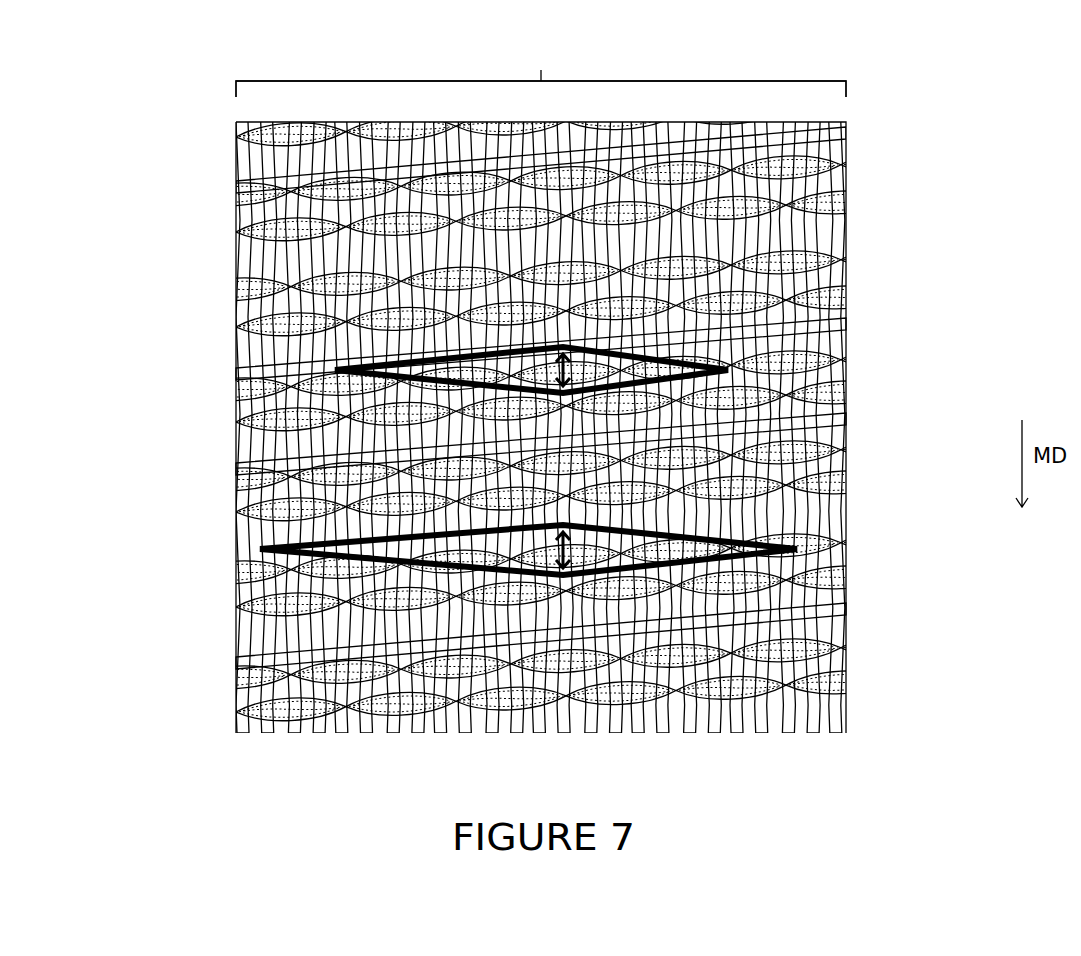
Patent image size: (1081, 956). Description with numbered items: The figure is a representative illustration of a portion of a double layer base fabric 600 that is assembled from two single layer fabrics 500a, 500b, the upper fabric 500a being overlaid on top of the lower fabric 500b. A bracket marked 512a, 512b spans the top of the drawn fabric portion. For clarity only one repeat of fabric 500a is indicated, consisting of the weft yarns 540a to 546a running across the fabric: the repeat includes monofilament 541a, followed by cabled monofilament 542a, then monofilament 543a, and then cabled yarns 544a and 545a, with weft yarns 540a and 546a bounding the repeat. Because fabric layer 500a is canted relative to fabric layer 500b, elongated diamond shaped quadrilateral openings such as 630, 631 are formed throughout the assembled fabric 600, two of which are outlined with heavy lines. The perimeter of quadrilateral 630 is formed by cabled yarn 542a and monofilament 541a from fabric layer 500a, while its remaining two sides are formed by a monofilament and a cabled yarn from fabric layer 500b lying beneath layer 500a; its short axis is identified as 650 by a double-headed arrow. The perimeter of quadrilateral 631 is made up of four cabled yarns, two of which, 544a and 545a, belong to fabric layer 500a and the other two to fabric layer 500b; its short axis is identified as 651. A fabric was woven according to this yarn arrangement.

The double layer base fabric 600 is at (119, 94).
The fabric region 512a is at (541, 65).
The fabric region 512b is at (541, 89).
The single layer fabric 500a is at (832, 173).
The single layer fabric 500b is at (834, 230).
The weft yarn 540a is at (832, 280).
The monofilament 541a is at (832, 318).
The cabled monofilament 542a is at (842, 372).
The monofilament 543a is at (835, 416).
The cabled yarn 544a is at (815, 473).
The cabled yarn 545a is at (827, 563).
The weft yarn 546a is at (825, 607).
The quadrilateral opening 630 is at (337, 371).
The quadrilateral opening 631 is at (262, 548).
The short axis 650 is at (520, 386).
The short axis 651 is at (560, 548).